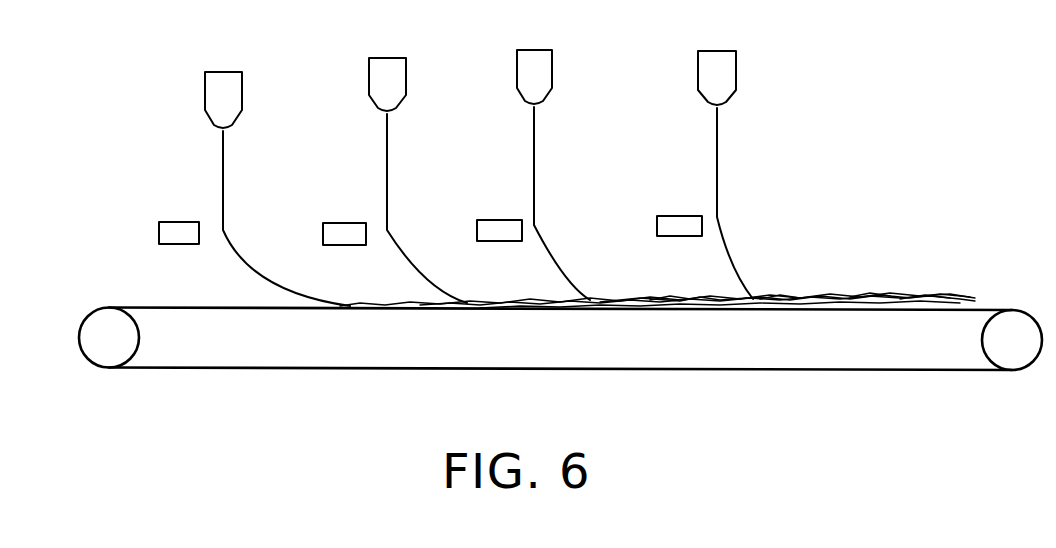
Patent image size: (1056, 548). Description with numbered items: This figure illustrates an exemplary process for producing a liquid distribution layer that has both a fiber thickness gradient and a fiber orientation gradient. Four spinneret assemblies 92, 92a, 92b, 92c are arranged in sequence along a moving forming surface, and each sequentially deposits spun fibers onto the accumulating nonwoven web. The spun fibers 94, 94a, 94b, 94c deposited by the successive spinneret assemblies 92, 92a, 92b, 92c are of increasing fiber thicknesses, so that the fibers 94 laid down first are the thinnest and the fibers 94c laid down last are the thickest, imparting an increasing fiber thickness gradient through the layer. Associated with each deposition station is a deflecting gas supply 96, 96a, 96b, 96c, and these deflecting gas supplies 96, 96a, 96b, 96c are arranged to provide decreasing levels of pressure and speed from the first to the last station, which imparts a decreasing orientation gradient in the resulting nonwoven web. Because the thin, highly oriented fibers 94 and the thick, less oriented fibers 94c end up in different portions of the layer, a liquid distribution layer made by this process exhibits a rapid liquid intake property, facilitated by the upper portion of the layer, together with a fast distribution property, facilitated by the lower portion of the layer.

The spinneret assembly 92 is at (263, 60).
The spinneret assembly 92a is at (423, 54).
The spinneret assembly 92b is at (572, 50).
The spinneret assembly 92c is at (752, 48).
The spun fibers 94 is at (249, 172).
The spun fibers 94a is at (411, 156).
The spun fibers 94b is at (557, 156).
The spun fibers 94c is at (750, 138).
The deflecting gas supply 96 is at (159, 232).
The deflecting gas supply 96a is at (323, 232).
The deflecting gas supply 96b is at (477, 225).
The deflecting gas supply 96c is at (657, 224).